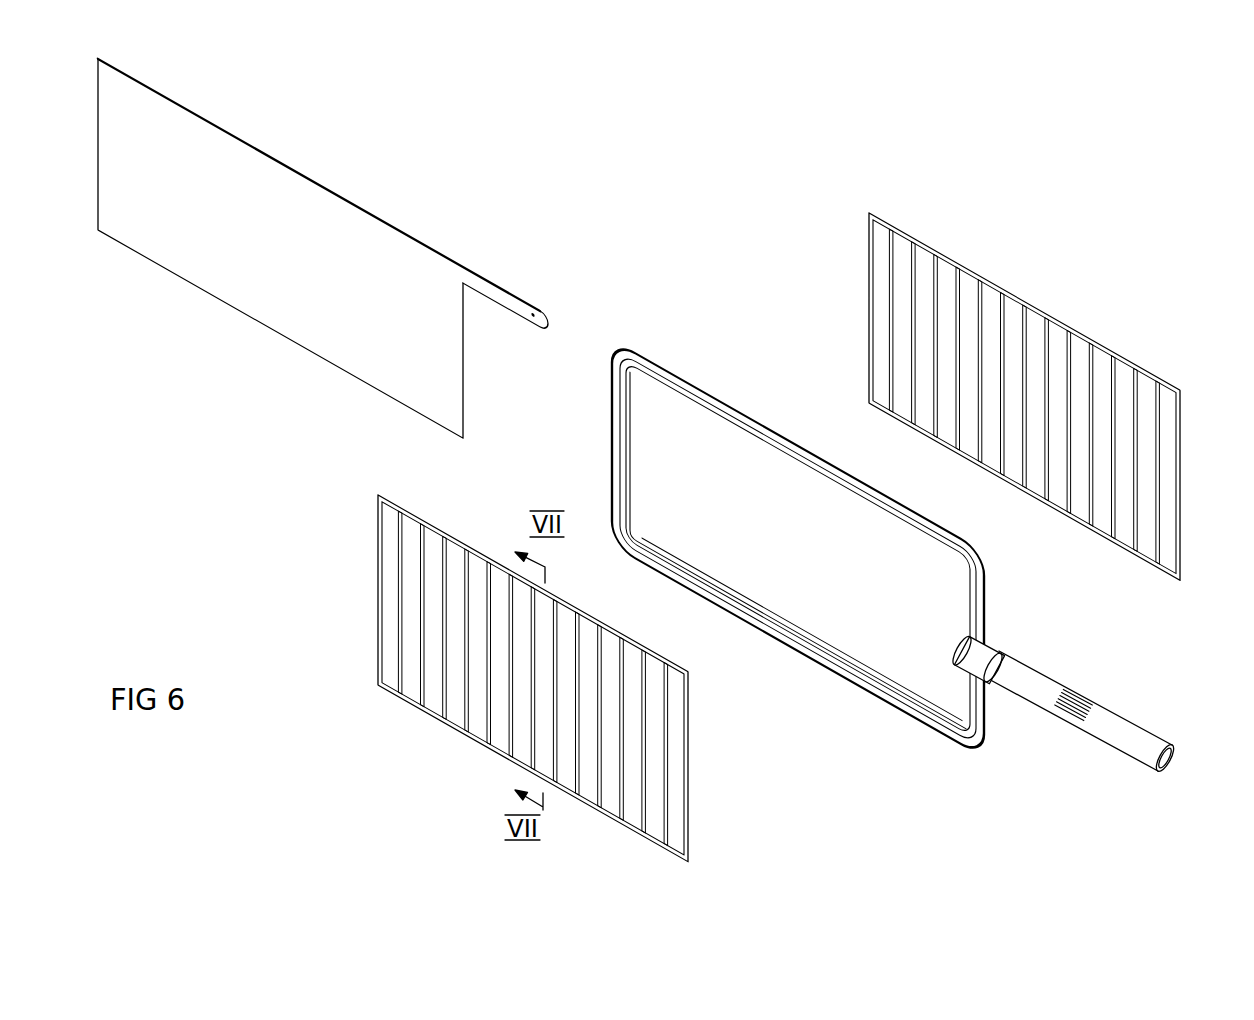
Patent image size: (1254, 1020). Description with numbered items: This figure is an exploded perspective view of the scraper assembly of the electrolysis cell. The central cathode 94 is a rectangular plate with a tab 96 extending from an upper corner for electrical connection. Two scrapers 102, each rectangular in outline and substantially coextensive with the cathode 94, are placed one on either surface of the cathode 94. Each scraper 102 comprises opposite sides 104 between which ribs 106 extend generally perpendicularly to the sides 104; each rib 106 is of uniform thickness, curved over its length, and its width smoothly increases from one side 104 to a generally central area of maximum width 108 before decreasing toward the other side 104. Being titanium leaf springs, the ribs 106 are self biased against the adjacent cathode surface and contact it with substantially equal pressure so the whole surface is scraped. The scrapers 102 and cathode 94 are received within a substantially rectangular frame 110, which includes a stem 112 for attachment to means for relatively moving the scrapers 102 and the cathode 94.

The cathode 94 is at (228, 247).
The tab 96 is at (498, 293).
The scraper 102 is at (353, 601).
The sides 104 is at (458, 538).
The ribs 106 is at (512, 733).
The central area of maximum width 108 is at (623, 725).
The frame 110 is at (752, 417).
The stem 112 is at (1118, 742).